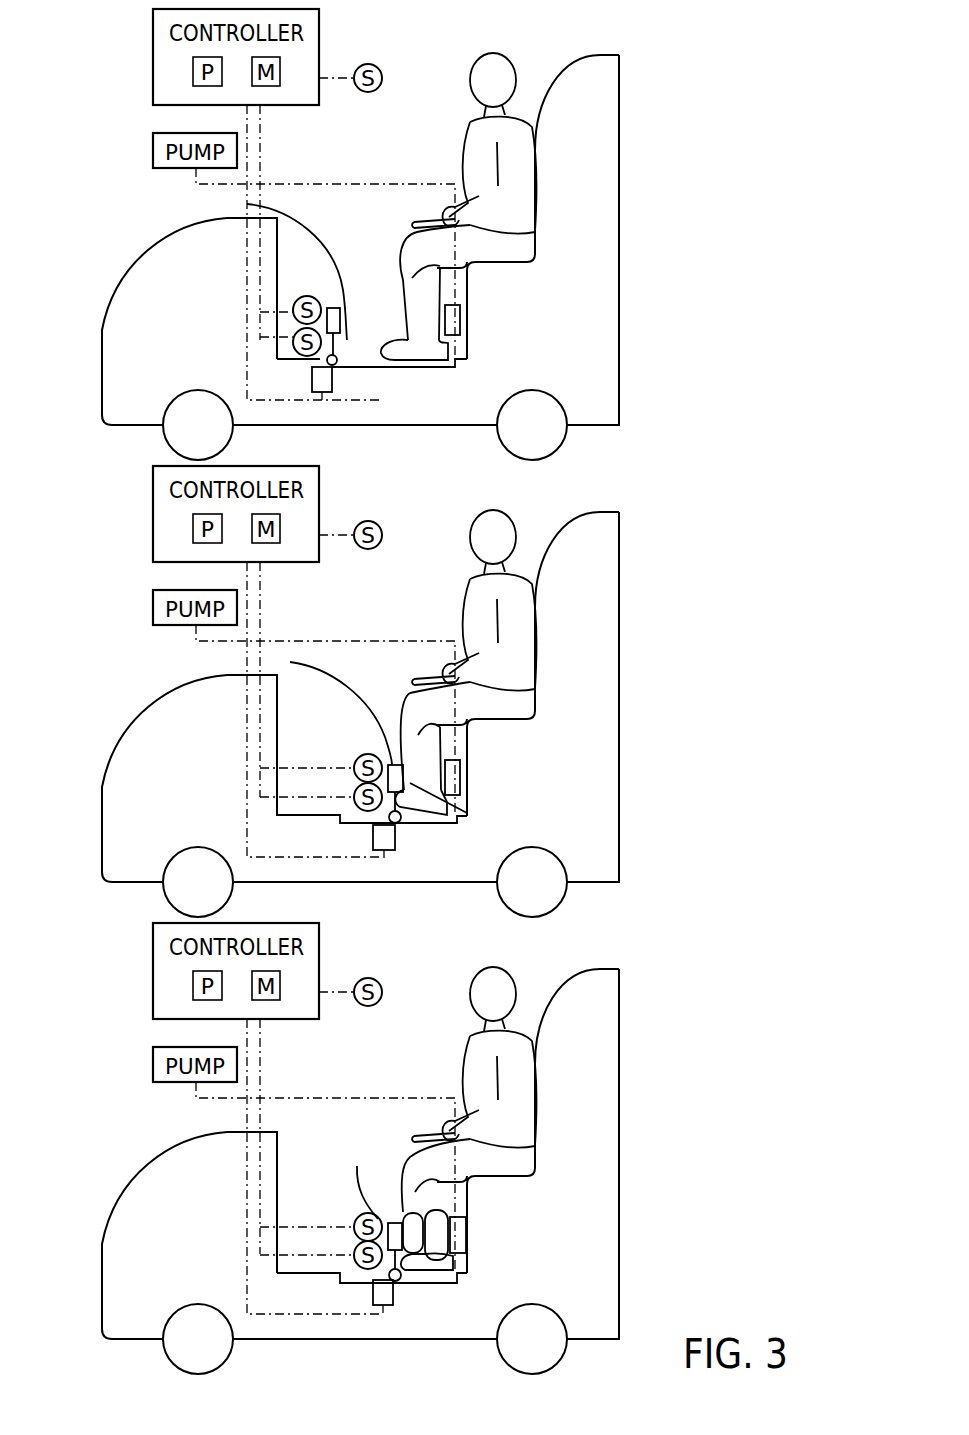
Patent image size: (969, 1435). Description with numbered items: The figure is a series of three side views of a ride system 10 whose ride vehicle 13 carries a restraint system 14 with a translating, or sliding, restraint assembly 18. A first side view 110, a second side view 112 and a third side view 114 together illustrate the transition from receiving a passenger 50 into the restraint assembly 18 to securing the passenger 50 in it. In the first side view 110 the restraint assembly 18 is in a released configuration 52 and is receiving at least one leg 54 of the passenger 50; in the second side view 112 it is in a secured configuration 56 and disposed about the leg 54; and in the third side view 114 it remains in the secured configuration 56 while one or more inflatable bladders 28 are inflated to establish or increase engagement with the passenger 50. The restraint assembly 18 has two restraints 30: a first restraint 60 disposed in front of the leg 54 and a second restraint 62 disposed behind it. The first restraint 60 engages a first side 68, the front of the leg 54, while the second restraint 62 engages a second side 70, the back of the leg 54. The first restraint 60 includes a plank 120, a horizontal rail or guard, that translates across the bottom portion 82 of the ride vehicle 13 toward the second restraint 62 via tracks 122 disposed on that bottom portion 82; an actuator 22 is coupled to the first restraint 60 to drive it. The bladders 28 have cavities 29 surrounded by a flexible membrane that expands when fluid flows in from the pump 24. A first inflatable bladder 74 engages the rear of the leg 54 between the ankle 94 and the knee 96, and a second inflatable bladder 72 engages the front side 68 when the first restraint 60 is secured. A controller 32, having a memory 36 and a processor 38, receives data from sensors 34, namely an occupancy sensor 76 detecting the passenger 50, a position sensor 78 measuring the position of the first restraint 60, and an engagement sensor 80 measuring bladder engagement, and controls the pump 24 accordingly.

The ride system 10 is at (643, 173).
The ride vehicle 13 is at (600, 281).
The restraint system 14 is at (323, 180).
The restraint assembly 18 is at (432, 375).
The actuator 22 is at (373, 378).
The pump 24 is at (153, 150).
The inflatable bladder 28 is at (496, 1260).
The cavity 29 is at (395, 1317).
The restraint 30 is at (388, 310).
The controller 32 is at (153, 82).
The sensor 34 is at (368, 92).
The memory 36 is at (280, 64).
The processor 38 is at (193, 70).
The passenger 50 is at (530, 143).
The released configuration 52 is at (306, 212).
The leg 54 is at (372, 292).
The secured configuration 56 is at (339, 628).
The first restraint 60 is at (290, 206).
The second restraint 62 is at (458, 333).
The first side 68 is at (398, 295).
The second side 70 is at (440, 283).
The second inflatable bladder 72 is at (287, 1277).
The first inflatable bladder 74 is at (506, 1226).
The occupancy sensor 76 is at (382, 82).
The position sensor 78 is at (354, 312).
The engagement sensor 80 is at (355, 340).
The bottom portion 82 is at (325, 431).
The ankle 94 is at (404, 308).
The knee 96 is at (405, 282).
The first side view 110 is at (100, 260).
The second side view 112 is at (81, 683).
The third side view 114 is at (81, 1140).
The plank 120 is at (338, 364).
The track 122 is at (417, 368).